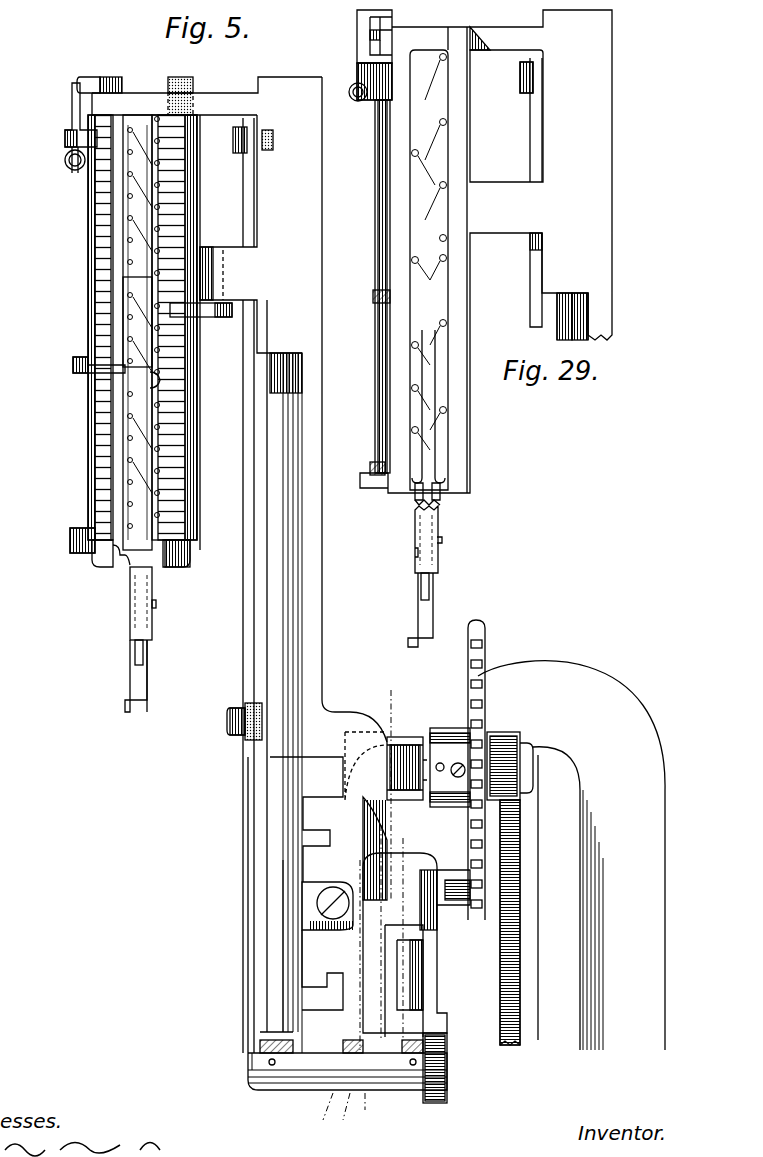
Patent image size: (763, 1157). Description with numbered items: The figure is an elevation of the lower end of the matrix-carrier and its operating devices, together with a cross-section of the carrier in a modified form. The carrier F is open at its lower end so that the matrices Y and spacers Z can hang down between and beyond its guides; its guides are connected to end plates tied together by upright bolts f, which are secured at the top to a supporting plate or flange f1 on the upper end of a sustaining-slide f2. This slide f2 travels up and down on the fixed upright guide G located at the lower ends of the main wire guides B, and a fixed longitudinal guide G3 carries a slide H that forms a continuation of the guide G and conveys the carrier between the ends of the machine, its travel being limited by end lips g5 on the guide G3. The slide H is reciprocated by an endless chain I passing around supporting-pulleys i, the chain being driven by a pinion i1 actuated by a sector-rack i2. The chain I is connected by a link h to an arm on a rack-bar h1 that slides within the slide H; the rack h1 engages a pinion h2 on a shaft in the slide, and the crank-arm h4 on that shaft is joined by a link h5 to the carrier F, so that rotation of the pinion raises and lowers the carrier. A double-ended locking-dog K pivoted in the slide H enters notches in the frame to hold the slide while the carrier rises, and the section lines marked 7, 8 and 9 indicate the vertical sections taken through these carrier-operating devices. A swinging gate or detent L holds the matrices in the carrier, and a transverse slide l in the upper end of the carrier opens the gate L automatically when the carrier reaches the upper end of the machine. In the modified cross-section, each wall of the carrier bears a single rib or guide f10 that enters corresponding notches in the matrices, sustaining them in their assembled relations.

In FIG. 5, the upright bolts f is at (108, 77).
In FIG. 5, the supporting plate or flange f1 is at (136, 103).
In FIG. 5, the sustaining-slide f2 is at (72, 104).
In FIG. 29, the sustaining-slide f2 is at (535, 192).
In FIG. 5, the transverse slide l is at (86, 106).
In FIG. 29, the transverse slide l is at (378, 30).
In FIG. 5, the carrier F is at (123, 341).
In FIG. 29, the carrier F is at (394, 270).
In FIG. 5, the matrices Y is at (145, 311).
In FIG. 29, the matrices Y is at (428, 532).
In FIG. 5, the wire guides B is at (160, 378).
In FIG. 5, the swinging gate or detent L is at (120, 406).
In FIG. 29, the swinging gate or detent L is at (373, 297).
In FIG. 5, the link h5 is at (243, 502).
In FIG. 29, the link h5 is at (532, 135).
In FIG. 5, the spacers Z is at (138, 685).
In FIG. 29, the spacers Z is at (420, 617).
In FIG. 5, the lower fixed guide G is at (318, 580).
In FIG. 29, the lower fixed guide G is at (600, 314).
In FIG. 5, the section line 7 is at (367, 907).
In FIG. 5, the section line 8 is at (382, 973).
In FIG. 5, the section line 9 is at (351, 970).
In FIG. 5, the supporting-pulleys i is at (480, 671).
In FIG. 5, the double-ended locking-dog K is at (404, 878).
In FIG. 5, the endless chain I is at (480, 623).
In FIG. 5, the pinion i1 is at (522, 736).
In FIG. 5, the sector-rack i2 is at (522, 868).
In FIG. 5, the fixed longitudinal guide G3 is at (314, 883).
In FIG. 5, the end lips g5 is at (308, 903).
In FIG. 5, the slide H is at (272, 877).
In FIG. 5, the crank-arm h4 is at (252, 965).
In FIG. 5, the rack-bar h1 is at (405, 945).
In FIG. 5, the link h is at (447, 923).
In FIG. 5, the pinion h2 is at (438, 1107).
In FIG. 29, the rib or guide f10 is at (440, 488).